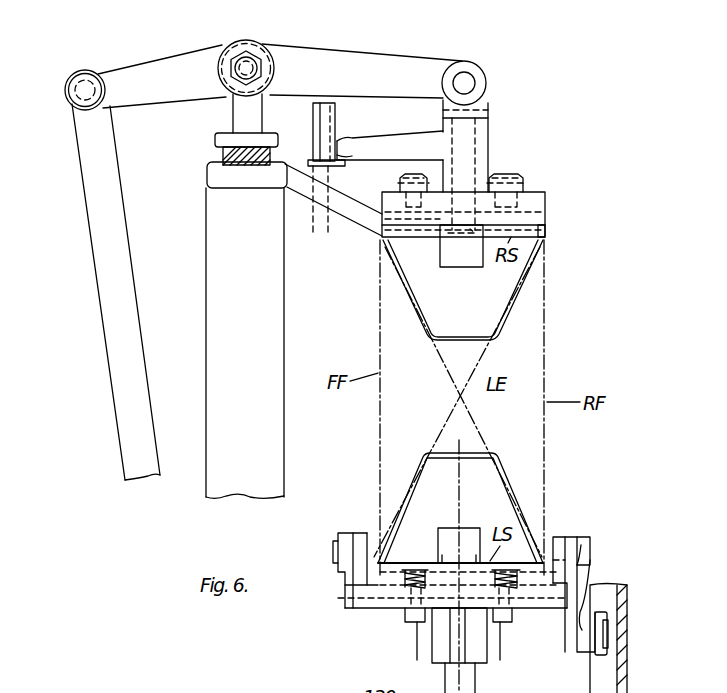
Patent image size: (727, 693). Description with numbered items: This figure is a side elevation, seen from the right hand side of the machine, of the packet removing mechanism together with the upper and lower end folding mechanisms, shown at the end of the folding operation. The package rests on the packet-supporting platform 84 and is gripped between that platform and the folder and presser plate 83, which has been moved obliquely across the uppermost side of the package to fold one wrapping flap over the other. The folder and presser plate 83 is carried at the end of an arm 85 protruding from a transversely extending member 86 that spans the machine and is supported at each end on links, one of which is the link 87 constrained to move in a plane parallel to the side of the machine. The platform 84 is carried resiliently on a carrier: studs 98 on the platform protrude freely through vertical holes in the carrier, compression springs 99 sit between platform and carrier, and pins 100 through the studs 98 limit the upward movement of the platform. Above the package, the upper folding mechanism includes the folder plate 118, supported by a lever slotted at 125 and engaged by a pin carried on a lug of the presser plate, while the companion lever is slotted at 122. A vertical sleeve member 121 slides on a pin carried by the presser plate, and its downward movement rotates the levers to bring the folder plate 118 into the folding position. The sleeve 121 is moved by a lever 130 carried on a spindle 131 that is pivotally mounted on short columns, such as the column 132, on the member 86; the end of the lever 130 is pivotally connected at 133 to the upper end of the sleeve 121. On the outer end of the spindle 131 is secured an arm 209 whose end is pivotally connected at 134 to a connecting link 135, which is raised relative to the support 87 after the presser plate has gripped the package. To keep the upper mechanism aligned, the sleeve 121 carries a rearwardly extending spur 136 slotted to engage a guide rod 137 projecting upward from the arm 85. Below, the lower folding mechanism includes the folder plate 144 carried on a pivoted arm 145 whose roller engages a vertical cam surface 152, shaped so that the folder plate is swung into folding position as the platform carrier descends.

The pivot connection 134 is at (82, 70).
The arm 209 is at (145, 92).
The spindle 131 is at (246, 57).
The lever 130 is at (350, 76).
The pivot connection 133 is at (466, 84).
The vertical sleeve member 121 is at (483, 129).
The guide rod 137 is at (323, 119).
The rearwardly extending spur 136 is at (386, 142).
The short column 132 is at (242, 126).
The transversely extending member 86 is at (226, 156).
The link 87 is at (224, 278).
The connecting link 135 is at (104, 194).
The arm 85 is at (331, 194).
The folder and presser plate 83 is at (547, 229).
The slot 122 is at (416, 179).
The slot 125 is at (503, 174).
The folder plate 118 is at (485, 298).
The folder plate 144 is at (530, 508).
The packet-supporting platform 84 is at (356, 557).
The compression spring 99 is at (404, 590).
The pin 100 is at (413, 613).
The stud 98 is at (418, 625).
The arm 145 is at (568, 616).
The vertical cam surface 152 is at (601, 582).